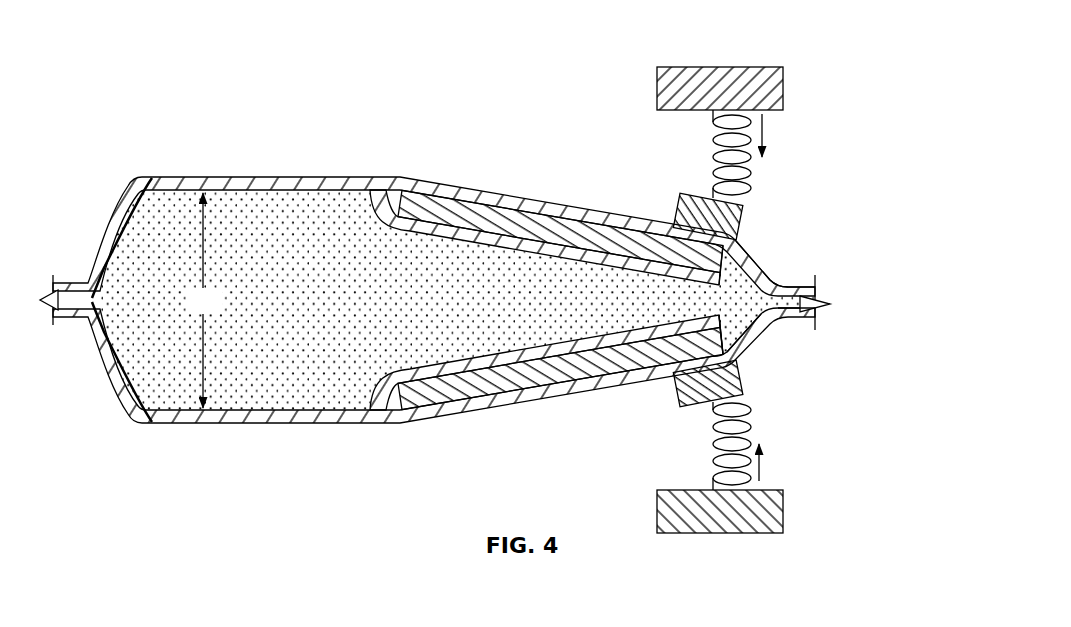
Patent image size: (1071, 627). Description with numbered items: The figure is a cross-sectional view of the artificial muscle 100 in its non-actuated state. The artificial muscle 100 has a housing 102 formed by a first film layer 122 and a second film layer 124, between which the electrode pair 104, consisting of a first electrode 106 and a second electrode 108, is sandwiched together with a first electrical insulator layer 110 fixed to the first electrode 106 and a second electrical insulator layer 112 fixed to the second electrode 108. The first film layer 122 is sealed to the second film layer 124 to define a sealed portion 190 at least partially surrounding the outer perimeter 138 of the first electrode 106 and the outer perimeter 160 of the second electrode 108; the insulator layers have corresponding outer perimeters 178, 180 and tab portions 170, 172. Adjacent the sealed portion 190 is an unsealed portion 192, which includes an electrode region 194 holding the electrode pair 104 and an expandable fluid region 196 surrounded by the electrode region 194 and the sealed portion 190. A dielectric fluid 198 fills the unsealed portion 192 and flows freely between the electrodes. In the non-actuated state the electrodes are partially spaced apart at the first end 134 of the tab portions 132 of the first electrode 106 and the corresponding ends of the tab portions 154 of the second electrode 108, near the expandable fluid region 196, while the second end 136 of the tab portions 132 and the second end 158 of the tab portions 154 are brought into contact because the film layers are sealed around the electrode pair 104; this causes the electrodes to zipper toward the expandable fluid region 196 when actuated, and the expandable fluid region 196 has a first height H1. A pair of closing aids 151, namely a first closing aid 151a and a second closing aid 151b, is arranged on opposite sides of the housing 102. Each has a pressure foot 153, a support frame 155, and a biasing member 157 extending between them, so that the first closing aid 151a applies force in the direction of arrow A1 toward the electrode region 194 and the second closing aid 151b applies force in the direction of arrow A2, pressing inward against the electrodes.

The artificial muscle 100 is at (490, 297).
The housing 102 is at (110, 218).
The electrode pair 104 is at (583, 365).
The first electrode 106 is at (510, 390).
The second electrode 108 is at (560, 202).
The first electrical insulator layer 110 is at (513, 398).
The second electrical insulator layer 112 is at (366, 231).
The first film layer 122 is at (434, 421).
The second film layer 124 is at (450, 162).
The tab portions 132 is at (560, 401).
The first end 134 is at (517, 399).
The second end 136 is at (379, 195).
The outer perimeter 138 is at (752, 362).
The closing aid 151 is at (773, 297).
The first closing aid 151a is at (795, 518).
The second closing aid 151b is at (795, 81).
The pressure foot 153 is at (677, 223).
The tab portions 154 is at (551, 189).
The support frame 155 is at (752, 297).
The biasing member 157 is at (713, 138).
The second end 158 is at (782, 282).
The outer perimeter 160 is at (757, 262).
The tab portions 170 is at (637, 352).
The tab portions 172 is at (627, 246).
The outer perimeter 178 is at (776, 344).
The outer perimeter 180 is at (773, 330).
The sealed portion 190 is at (848, 299).
The unsealed portion 192 is at (434, 184).
The electrode region 194 is at (434, 184).
The expandable fluid region 196 is at (434, 184).
The dielectric fluid 198 is at (434, 421).
The first height H1 is at (205, 300).
The arrow A1 is at (780, 462).
The arrow A2 is at (781, 135).